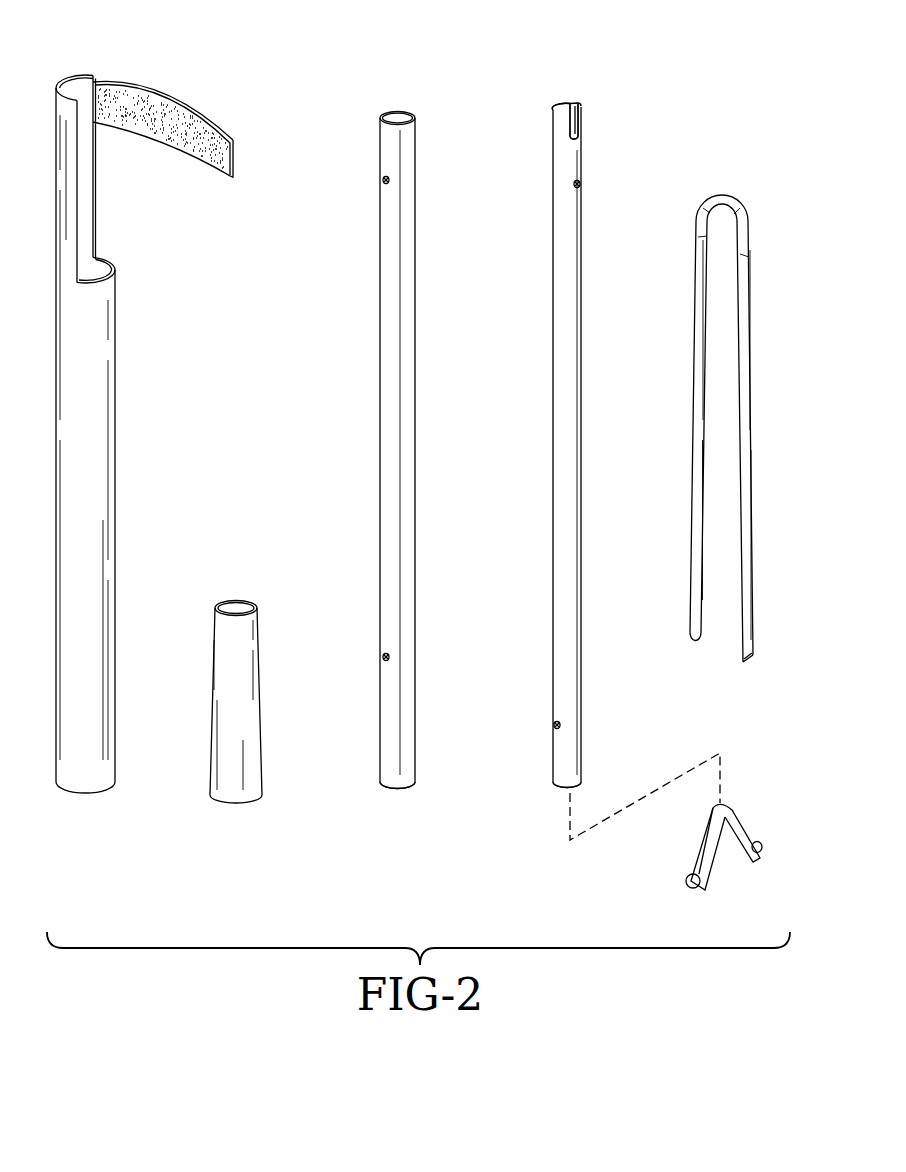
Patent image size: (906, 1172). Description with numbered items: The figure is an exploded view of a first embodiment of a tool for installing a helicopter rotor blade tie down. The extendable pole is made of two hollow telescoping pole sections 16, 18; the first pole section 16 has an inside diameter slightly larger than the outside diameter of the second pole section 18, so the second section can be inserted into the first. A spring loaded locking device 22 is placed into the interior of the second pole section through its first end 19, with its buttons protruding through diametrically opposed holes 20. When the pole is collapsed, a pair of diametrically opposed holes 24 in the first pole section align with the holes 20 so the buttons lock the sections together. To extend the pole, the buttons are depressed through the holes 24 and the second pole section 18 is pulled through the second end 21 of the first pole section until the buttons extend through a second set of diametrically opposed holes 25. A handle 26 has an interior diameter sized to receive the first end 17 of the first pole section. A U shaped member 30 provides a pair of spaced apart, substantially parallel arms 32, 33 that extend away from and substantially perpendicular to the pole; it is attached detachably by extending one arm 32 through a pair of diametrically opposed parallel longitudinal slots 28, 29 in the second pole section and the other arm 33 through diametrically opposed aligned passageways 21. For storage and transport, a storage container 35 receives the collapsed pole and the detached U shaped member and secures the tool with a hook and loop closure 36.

The first pole section 16 is at (416, 393).
The first end of the first pole section 17 is at (390, 790).
The second pole section 18 is at (580, 423).
The first end of the second pole section 19 is at (560, 793).
The diametrically opposed holes 20 is at (553, 724).
The second end of the first pole section / diametrically opposed aligned passageways 21 is at (390, 112).
The spring loaded locking device 22 is at (742, 830).
The diametrically opposed holes 24 is at (383, 655).
The second set of diametrically opposed holes 25 is at (383, 178).
The handle 26 is at (213, 670).
The slot 28 is at (582, 125).
The slot 29 is at (560, 108).
The U shaped member 30 is at (721, 405).
The arm 32 is at (693, 476).
The arm 33 is at (750, 462).
The storage container 35 is at (115, 380).
The hook and loop closure 36 is at (180, 103).